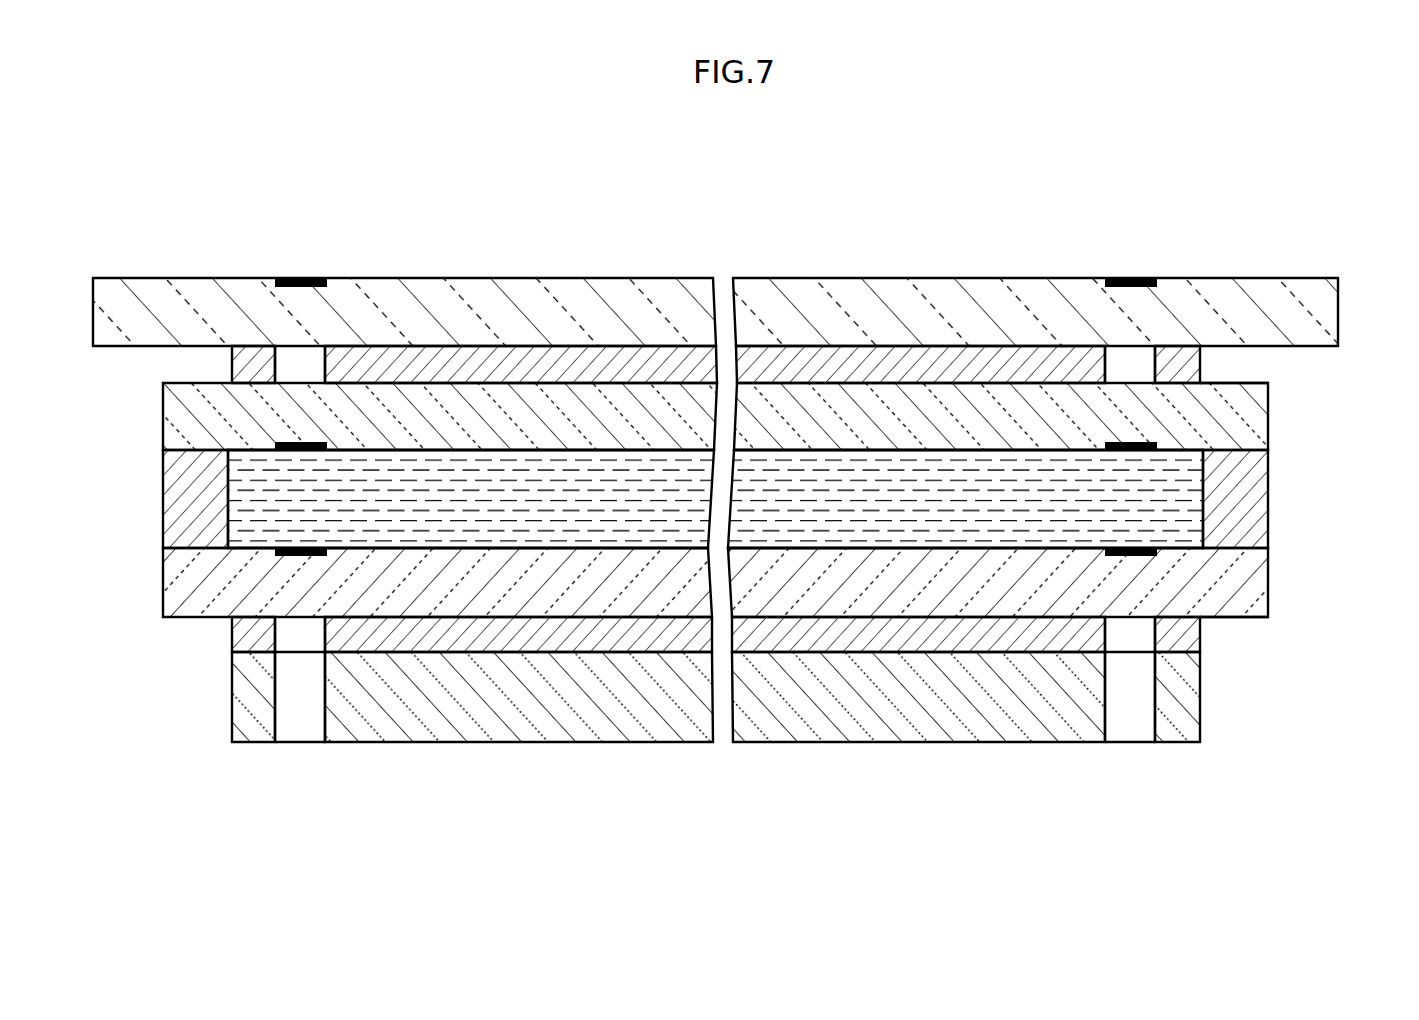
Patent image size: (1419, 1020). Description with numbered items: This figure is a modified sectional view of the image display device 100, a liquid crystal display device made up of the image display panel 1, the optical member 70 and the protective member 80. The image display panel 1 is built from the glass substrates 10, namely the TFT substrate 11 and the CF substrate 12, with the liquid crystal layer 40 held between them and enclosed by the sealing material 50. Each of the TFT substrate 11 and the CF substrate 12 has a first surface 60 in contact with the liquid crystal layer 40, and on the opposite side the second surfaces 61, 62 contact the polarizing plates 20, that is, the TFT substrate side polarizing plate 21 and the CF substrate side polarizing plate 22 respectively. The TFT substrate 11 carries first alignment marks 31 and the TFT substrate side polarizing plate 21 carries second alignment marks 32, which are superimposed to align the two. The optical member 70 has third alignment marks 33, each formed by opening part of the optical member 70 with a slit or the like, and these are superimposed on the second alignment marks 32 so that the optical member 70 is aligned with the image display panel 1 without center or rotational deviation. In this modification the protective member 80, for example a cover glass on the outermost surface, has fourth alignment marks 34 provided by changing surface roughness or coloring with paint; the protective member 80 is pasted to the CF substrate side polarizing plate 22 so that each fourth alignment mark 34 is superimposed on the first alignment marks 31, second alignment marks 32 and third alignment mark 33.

The image display device 100 is at (776, 224).
The image display panel 1 is at (1335, 428).
The glass substrates 10 is at (715, 517).
The TFT substrate 11 is at (803, 575).
The CF substrate 12 is at (873, 423).
The polarizing plates 20 is at (716, 514).
The TFT substrate side polarizing plate 21 is at (963, 625).
The CF substrate side polarizing plate 22 is at (997, 360).
The first alignment marks 31 is at (285, 447).
The second alignment marks 32 is at (277, 362).
The third alignment marks 33 is at (325, 718).
The fourth alignment marks 34 is at (297, 278).
The liquid crystal layer 40 is at (1152, 505).
The sealing material 50 is at (1230, 487).
The first surface 60 is at (631, 452).
The second surface 61 is at (1228, 615).
The second surface 62 is at (1228, 383).
The optical member 70 is at (1063, 708).
The protective member 80 is at (1200, 307).